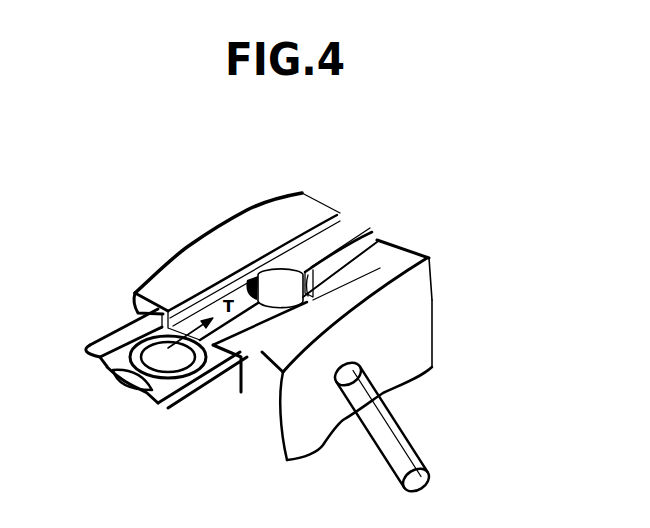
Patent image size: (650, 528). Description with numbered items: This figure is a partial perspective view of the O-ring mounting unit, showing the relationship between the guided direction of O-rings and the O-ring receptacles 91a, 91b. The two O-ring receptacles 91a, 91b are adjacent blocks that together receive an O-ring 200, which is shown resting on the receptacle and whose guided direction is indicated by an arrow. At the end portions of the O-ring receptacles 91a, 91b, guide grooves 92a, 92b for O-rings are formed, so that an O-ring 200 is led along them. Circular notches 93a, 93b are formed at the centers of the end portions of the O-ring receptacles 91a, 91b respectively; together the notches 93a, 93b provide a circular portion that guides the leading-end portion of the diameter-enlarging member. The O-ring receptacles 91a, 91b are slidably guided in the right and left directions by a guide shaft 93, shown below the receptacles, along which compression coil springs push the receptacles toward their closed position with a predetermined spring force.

The O-ring receptacle 91a is at (267, 222).
The O-ring receptacle 91b is at (388, 287).
The guide groove 92a is at (343, 230).
The guide groove 92b is at (380, 240).
The guide shaft 93 is at (406, 441).
The circular notch 93a is at (258, 288).
The circular notch 93b is at (433, 262).
The O-ring 200 is at (178, 381).